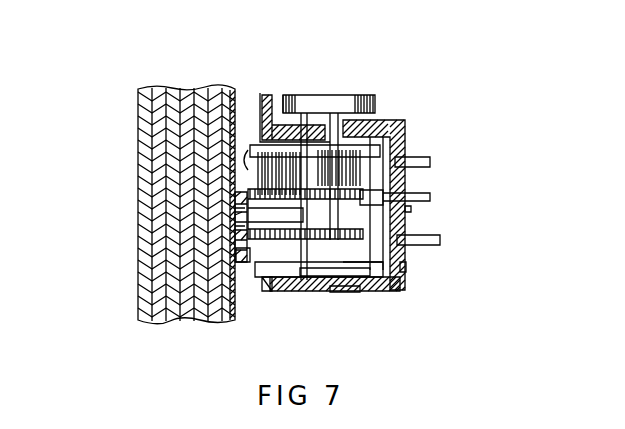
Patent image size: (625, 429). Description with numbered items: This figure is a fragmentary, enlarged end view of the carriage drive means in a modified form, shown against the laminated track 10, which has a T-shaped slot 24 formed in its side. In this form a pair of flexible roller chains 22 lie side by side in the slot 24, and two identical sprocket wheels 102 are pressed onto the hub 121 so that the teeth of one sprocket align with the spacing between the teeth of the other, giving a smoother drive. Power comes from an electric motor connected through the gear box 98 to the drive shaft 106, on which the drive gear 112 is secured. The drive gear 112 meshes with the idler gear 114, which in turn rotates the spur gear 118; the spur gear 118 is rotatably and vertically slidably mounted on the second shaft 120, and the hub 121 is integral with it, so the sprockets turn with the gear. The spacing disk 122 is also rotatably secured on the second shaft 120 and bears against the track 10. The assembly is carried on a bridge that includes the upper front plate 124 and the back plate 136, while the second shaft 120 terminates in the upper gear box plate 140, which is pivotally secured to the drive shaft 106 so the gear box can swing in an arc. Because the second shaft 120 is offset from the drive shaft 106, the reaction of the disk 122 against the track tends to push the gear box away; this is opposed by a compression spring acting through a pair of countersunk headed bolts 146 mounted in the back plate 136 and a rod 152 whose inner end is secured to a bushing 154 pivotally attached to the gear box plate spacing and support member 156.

The track 10 is at (132, 234).
The flexible roller chain 22 is at (236, 223).
The T-shaped slot 24 is at (242, 262).
The gear box 98 is at (318, 97).
The sprocket wheel 102 is at (312, 285).
The drive shaft 106 is at (378, 286).
The drive gear 112 is at (352, 165).
The idler gear 114 is at (250, 165).
The spur gear 118 is at (236, 192).
The second shaft 120 is at (268, 292).
The hub 121 is at (287, 216).
The spacing disk 122 is at (345, 292).
The upper front plate 124 is at (284, 128).
The back plate 136 is at (394, 124).
The upper gear box plate 140 is at (266, 100).
The countersunk headed bolts 146 is at (414, 158).
The rod 152 is at (420, 198).
The bushing 154 is at (409, 215).
The gear box plate spacing and support member 156 is at (408, 273).